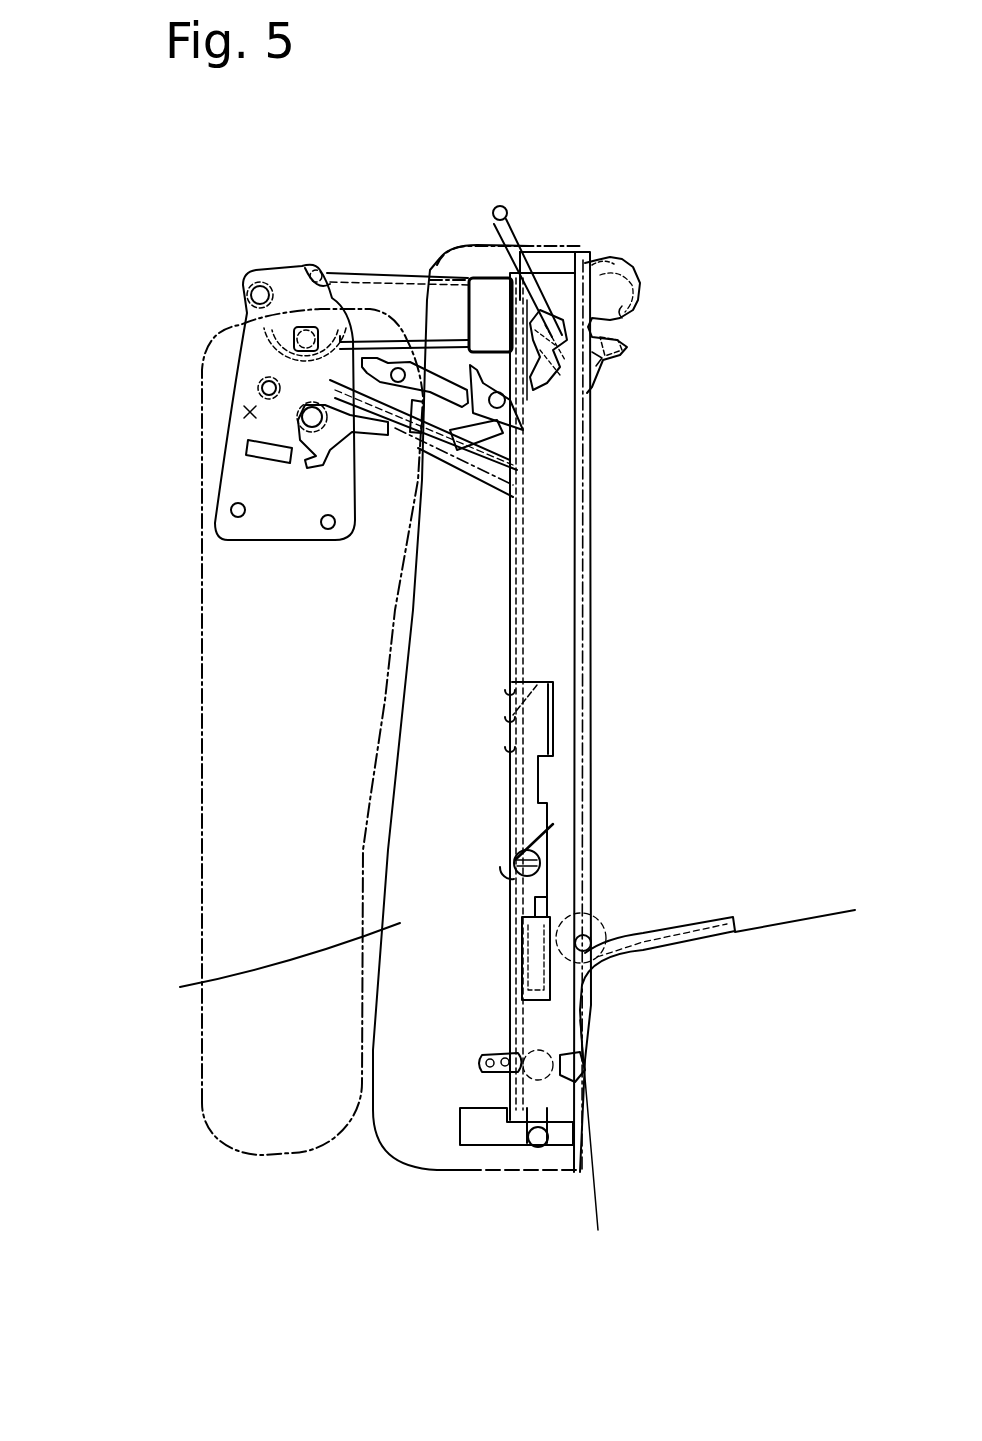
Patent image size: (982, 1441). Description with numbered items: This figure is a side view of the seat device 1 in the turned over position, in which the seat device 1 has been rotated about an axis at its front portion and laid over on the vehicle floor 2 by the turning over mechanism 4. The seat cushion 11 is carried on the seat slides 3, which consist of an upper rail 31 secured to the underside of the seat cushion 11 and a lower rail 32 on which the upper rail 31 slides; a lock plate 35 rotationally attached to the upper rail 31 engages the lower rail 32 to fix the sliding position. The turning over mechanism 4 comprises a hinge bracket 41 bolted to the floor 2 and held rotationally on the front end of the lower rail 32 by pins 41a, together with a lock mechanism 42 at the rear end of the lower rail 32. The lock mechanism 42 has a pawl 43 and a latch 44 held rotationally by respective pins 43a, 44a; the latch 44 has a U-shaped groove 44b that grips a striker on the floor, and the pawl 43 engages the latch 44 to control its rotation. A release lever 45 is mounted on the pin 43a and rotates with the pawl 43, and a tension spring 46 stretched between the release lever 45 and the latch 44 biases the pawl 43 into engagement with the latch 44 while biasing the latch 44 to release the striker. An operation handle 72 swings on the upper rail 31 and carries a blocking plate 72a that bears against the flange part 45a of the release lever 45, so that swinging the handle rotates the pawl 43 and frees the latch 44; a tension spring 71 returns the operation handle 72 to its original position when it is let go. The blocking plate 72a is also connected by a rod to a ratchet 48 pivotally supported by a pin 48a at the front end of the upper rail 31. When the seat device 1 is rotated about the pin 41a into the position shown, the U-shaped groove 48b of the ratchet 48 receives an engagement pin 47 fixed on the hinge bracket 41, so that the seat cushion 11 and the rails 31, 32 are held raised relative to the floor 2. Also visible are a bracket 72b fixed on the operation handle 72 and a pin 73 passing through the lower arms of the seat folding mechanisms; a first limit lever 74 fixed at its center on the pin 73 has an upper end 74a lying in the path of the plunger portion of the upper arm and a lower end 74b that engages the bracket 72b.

The seat device 1 is at (267, 1198).
The floor 2 is at (815, 917).
The seat slides 3 is at (518, 1193).
The turning over mechanism 4 is at (732, 1029).
The seat cushion 11 is at (182, 990).
The upper rail 31 is at (560, 568).
The lower rail 32 is at (588, 640).
The lock plate 35 is at (532, 797).
The hinge bracket 41 is at (653, 933).
The pin 41a is at (560, 968).
The lock mechanism 42 is at (767, 205).
The pawl 43 is at (621, 350).
The pin 43a is at (605, 362).
The latch 44 is at (610, 283).
The pin 44a is at (600, 257).
The U-shaped groove 44b is at (625, 320).
The release lever 45 is at (592, 357).
The flange part 45a is at (560, 390).
The tension spring 46 is at (507, 320).
The engagement pin 47 is at (560, 1062).
The ratchet 48 is at (557, 1123).
The pin 48a is at (538, 1068).
The U-shaped groove 48b is at (562, 1037).
The tension spring 71 is at (470, 430).
The operation handle 72 is at (548, 292).
The blocking plate 72a is at (572, 257).
The bracket 72b is at (490, 395).
The pin 73 is at (410, 432).
The first limit lever 74 is at (440, 378).
The upper end 74a is at (352, 307).
The lower end 74b is at (465, 445).